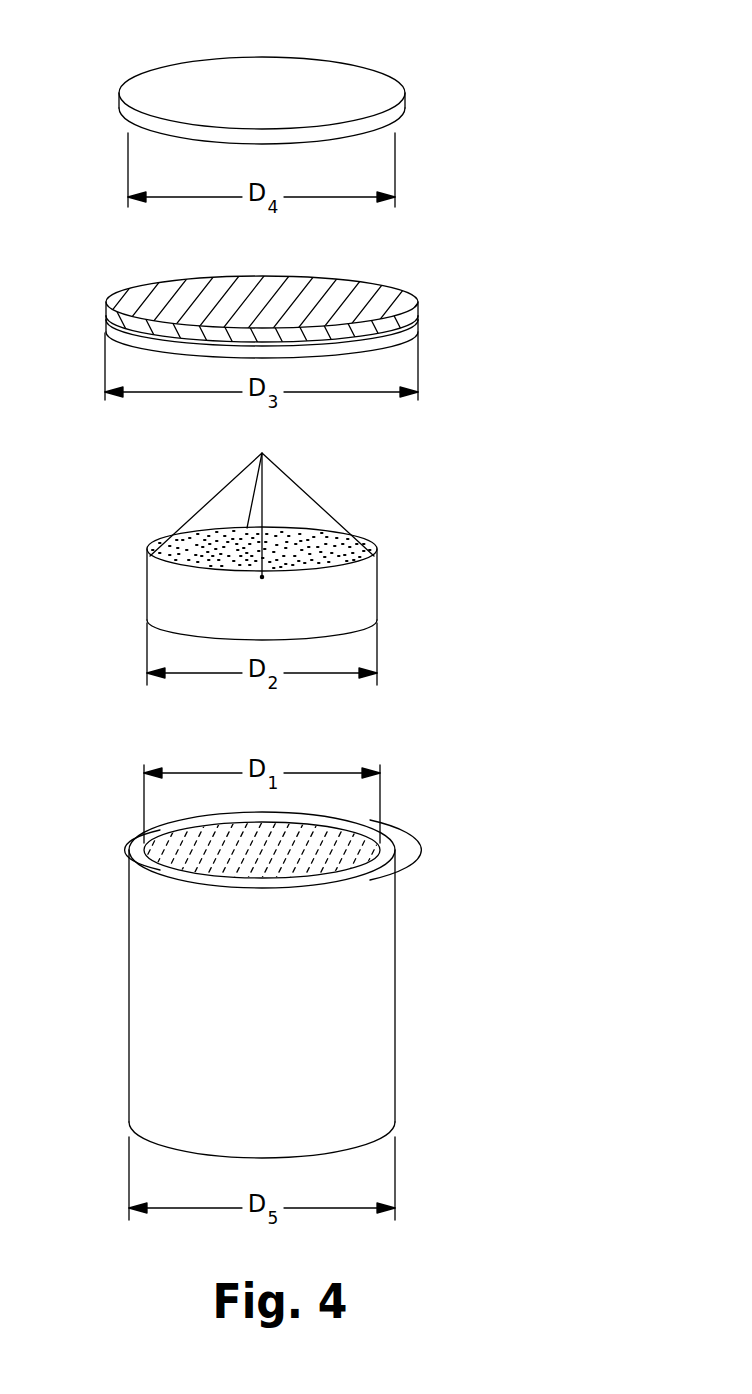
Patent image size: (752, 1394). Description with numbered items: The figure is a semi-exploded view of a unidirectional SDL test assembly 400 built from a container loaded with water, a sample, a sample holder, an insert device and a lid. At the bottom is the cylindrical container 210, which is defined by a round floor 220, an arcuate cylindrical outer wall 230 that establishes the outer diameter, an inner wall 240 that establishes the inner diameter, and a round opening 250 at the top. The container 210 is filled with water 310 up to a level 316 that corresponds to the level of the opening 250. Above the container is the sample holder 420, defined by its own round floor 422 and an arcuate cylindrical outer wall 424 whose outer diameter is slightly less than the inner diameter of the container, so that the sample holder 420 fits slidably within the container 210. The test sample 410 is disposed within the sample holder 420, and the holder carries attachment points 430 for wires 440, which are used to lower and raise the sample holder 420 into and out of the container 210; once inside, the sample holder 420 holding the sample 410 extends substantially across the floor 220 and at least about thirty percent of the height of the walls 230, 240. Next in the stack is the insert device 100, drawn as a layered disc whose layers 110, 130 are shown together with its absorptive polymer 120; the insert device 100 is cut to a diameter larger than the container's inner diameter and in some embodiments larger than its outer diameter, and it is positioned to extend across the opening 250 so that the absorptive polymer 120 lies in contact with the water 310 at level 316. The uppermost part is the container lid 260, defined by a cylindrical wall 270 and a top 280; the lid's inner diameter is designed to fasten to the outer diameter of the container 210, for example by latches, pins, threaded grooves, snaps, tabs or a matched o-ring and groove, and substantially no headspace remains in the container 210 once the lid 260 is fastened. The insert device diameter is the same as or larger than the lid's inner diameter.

The insert device 100 is at (269, 307).
The intermediate layer 110 is at (413, 310).
The absorptive polymer 120 is at (417, 332).
The top layer 130 is at (367, 283).
The cylindrical container 210 is at (368, 998).
The round floor 220 is at (368, 1147).
The arcuate cylindrical outer wall 230 is at (394, 850).
The inner wall 240 is at (380, 843).
The round opening 250 is at (150, 850).
The container lid 260 is at (387, 125).
The cylindrical wall 270 is at (405, 105).
The top 280 is at (360, 86).
The water 310 is at (333, 858).
The level 316 is at (165, 874).
The test assembly 400 is at (306, 532).
The test sample 410 is at (340, 547).
The sample holder 420 is at (353, 581).
The round floor 422 is at (177, 636).
The arcuate cylindrical outer wall 424 is at (147, 582).
The attachment points 430 is at (262, 577).
The wires 440 is at (318, 506).